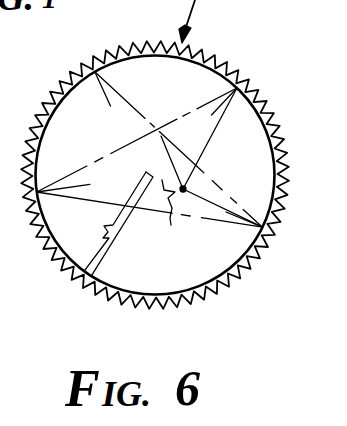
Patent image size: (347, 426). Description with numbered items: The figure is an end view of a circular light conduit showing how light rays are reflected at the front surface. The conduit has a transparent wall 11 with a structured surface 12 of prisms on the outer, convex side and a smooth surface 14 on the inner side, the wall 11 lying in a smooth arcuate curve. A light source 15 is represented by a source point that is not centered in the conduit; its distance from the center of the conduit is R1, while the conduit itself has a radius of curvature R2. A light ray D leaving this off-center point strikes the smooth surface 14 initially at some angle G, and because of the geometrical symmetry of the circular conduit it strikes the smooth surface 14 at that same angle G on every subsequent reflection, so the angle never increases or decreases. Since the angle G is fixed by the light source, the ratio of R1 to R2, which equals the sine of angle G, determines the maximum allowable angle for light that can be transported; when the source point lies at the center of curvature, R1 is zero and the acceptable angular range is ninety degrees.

The wall 11 is at (153, 40).
The structured surface 12 is at (230, 62).
The smooth surface 14 is at (202, 67).
The light source 15 is at (183, 188).
The distance from light source point to center R1 is at (132, 224).
The radius of curvature R2 is at (76, 227).
The light ray D is at (207, 148).
The angle G is at (115, 89).